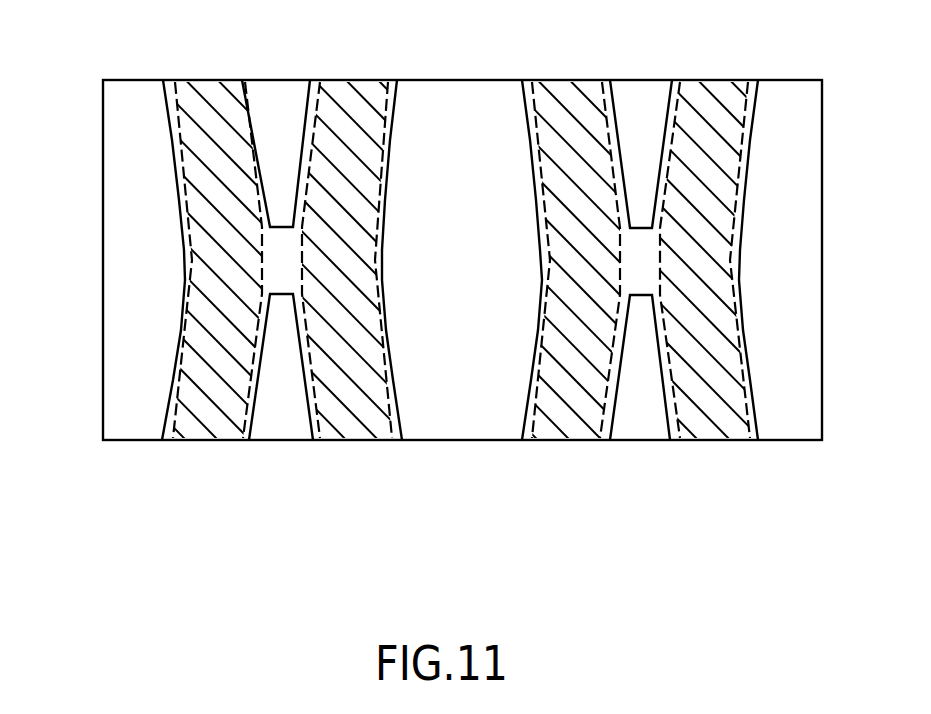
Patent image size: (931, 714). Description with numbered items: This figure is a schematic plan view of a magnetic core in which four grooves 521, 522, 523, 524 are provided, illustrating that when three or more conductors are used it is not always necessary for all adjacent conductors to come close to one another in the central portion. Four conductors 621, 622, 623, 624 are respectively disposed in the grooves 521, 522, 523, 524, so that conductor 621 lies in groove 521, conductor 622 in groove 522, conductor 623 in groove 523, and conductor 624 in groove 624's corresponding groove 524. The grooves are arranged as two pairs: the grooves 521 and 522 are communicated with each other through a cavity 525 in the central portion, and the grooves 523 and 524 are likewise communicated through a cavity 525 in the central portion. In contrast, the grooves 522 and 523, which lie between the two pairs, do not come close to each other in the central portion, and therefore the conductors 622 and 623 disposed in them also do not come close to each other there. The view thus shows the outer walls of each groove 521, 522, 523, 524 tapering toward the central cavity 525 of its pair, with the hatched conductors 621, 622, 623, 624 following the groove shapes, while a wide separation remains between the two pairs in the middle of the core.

The groove 521 is at (170, 85).
The groove 522 is at (398, 85).
The groove 523 is at (528, 85).
The groove 524 is at (757, 85).
The cavity 525 is at (276, 265).
The conductor 621 is at (207, 430).
The conductor 622 is at (367, 430).
The conductor 623 is at (565, 430).
The conductor 624 is at (725, 430).